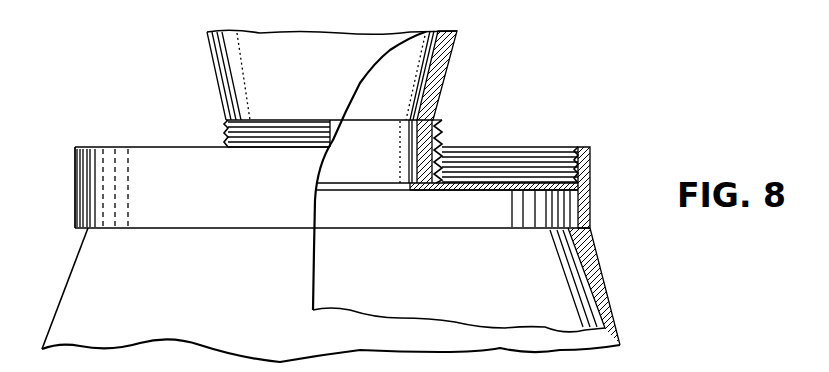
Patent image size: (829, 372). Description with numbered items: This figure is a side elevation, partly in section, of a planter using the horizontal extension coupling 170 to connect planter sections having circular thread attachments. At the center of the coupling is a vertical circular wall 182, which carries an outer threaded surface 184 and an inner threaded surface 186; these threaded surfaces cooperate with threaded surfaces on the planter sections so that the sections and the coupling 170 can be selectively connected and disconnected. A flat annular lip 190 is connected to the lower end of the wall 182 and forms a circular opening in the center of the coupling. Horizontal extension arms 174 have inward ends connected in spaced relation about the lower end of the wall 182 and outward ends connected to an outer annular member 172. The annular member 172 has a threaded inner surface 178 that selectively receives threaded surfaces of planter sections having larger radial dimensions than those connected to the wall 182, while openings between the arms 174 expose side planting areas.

The horizontal extension coupling 170 is at (70, 188).
The outer annular member 172 is at (149, 173).
The horizontal extension arms 174 is at (502, 188).
The threaded inner surface 178 is at (560, 153).
The vertical circular wall 182 is at (320, 120).
The outer threaded surface 184 is at (222, 125).
The inner threaded surface 186 is at (430, 140).
The flat annular lip 190 is at (410, 191).